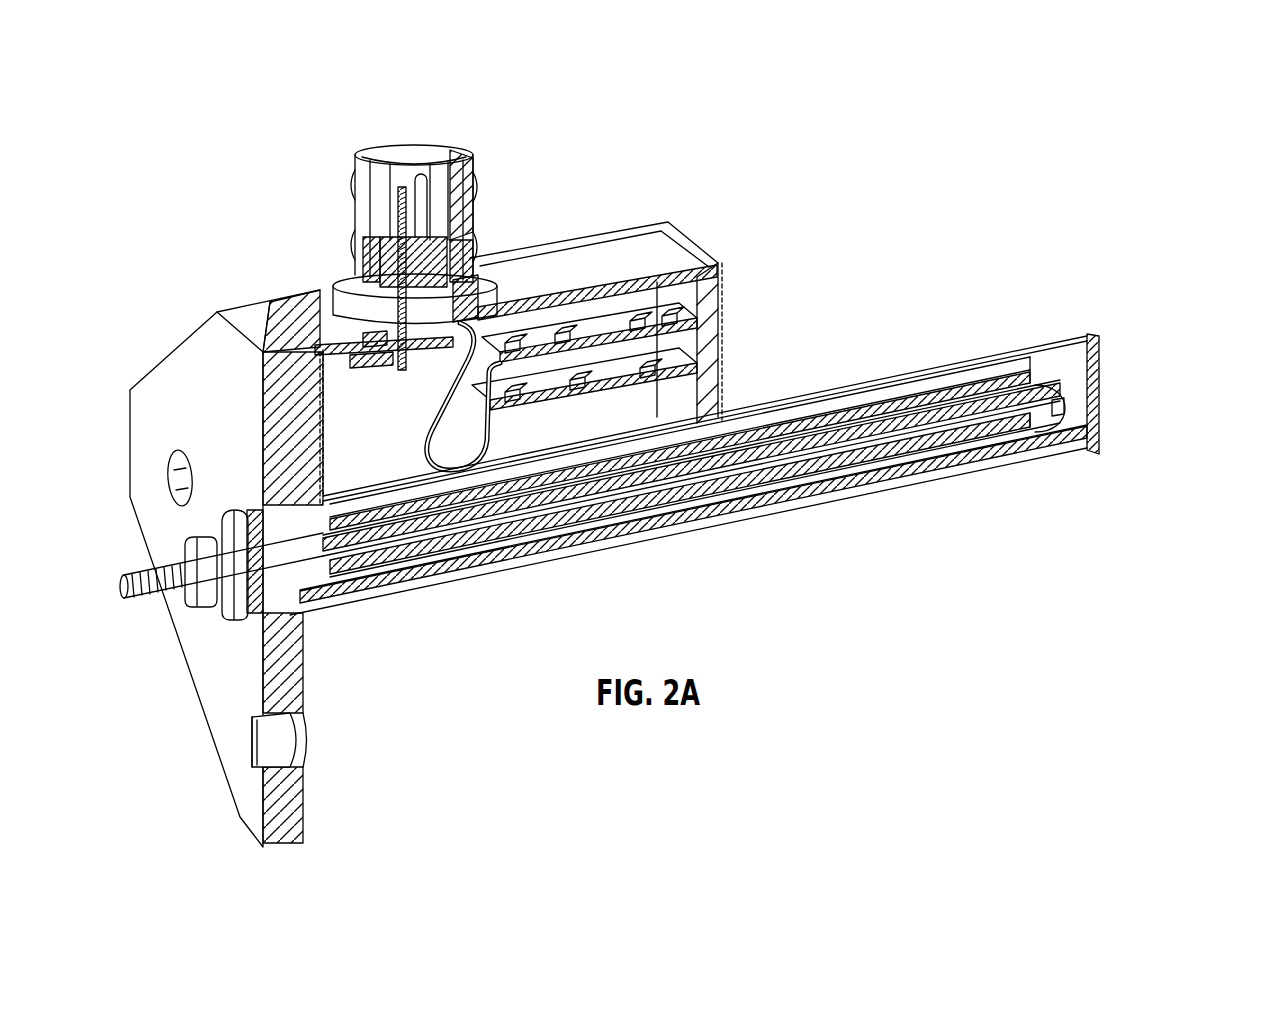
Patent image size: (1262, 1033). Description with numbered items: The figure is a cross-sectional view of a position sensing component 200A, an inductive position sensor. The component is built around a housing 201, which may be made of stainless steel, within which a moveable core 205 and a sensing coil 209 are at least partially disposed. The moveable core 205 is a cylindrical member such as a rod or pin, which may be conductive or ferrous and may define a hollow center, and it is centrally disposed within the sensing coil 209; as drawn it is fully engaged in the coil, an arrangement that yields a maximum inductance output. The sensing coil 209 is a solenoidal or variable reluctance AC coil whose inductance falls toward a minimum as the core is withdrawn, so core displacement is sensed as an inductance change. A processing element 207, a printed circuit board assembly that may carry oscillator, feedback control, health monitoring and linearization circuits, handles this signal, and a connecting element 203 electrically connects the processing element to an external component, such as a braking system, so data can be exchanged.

The position sensing component 200A is at (1167, 143).
The housing 201 is at (240, 425).
The connecting element 203 is at (440, 150).
The moveable core 205 is at (155, 562).
The processing element 207 is at (717, 332).
The sensing coil 209 is at (877, 467).